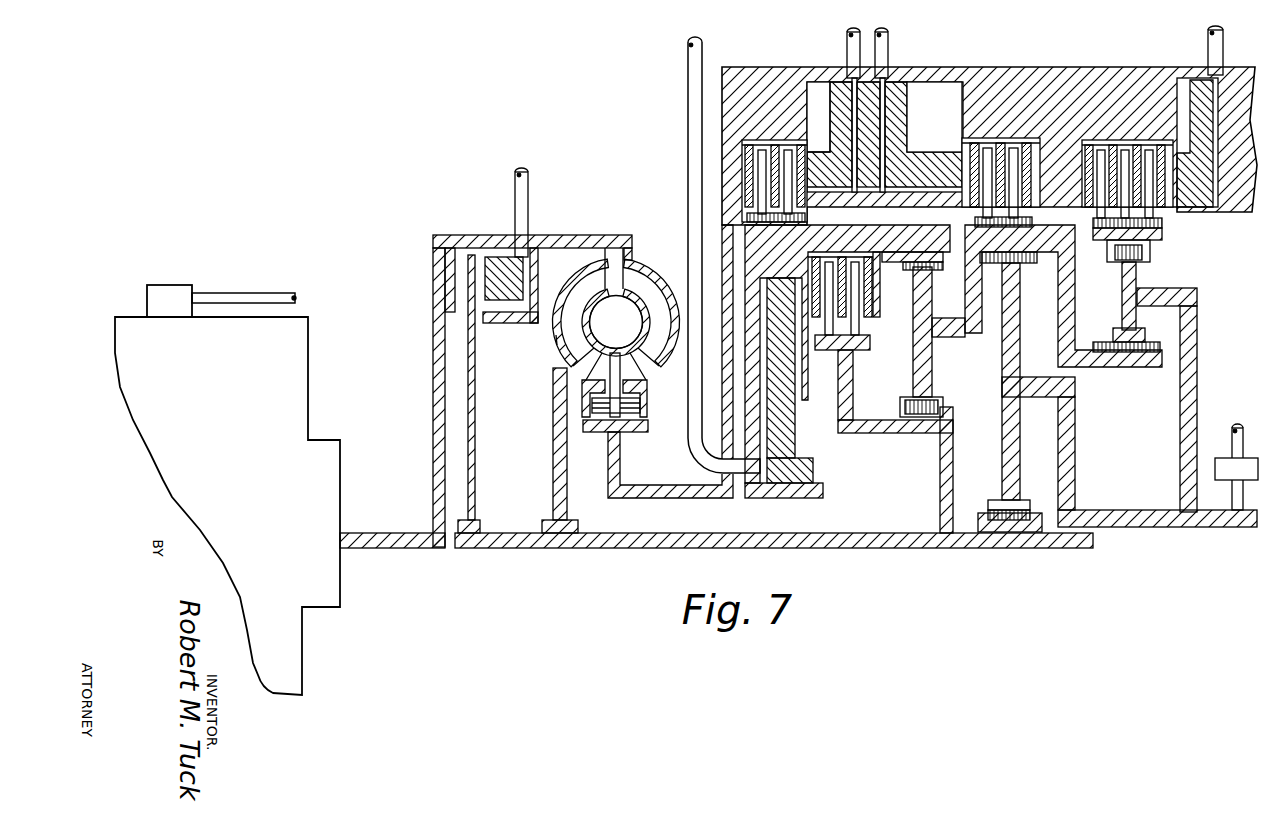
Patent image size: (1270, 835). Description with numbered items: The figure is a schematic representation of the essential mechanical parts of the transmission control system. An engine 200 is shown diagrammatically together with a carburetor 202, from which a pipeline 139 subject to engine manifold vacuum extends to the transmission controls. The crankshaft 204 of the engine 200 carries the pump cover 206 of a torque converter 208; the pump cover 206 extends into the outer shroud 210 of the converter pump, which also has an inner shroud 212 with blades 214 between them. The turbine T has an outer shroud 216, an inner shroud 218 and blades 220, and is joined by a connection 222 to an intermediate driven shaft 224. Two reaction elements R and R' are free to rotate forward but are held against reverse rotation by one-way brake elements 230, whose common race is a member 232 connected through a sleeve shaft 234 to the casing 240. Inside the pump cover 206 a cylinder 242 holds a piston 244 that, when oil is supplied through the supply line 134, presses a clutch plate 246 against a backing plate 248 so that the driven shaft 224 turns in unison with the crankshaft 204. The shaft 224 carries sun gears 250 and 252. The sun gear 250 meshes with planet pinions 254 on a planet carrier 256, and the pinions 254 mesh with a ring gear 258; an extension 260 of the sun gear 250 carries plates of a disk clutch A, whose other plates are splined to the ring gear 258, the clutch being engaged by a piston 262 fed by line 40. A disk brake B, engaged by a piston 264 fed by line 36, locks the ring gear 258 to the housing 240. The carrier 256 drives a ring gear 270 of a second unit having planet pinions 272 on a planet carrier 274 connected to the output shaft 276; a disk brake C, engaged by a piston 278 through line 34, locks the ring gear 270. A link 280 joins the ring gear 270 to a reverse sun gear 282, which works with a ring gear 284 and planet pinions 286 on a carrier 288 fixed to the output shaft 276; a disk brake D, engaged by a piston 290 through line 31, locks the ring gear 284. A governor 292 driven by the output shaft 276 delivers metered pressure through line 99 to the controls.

The engine 200 is at (310, 623).
The carburetor 202 is at (162, 305).
The pipeline 139 is at (297, 295).
The crankshaft 204 is at (373, 548).
The pump cover 206 is at (457, 235).
The backing plate 248 is at (447, 283).
The supply line 134 is at (529, 182).
The cylinder 242 is at (537, 246).
The piston 244 is at (504, 302).
The clutch plate 246 is at (476, 365).
The connection 222 is at (553, 420).
The intermediate driven shaft 224 is at (599, 548).
The blades 220 is at (614, 270).
The torque converter 208 is at (642, 278).
The inner shroud 212 is at (641, 300).
The outer shroud 216 is at (573, 300).
The inner shroud 218 is at (588, 319).
The blades 214 is at (652, 318).
The reaction element R is at (584, 357).
The reaction element R' is at (649, 357).
The turbine T is at (556, 339).
The outer shroud 210 is at (648, 366).
The one-way brake elements 230 is at (608, 424).
The member 232 is at (639, 432).
The sleeve shaft 234 is at (698, 498).
The line 40 is at (687, 60).
The casing 240 is at (752, 72).
The piston 264 is at (838, 92).
The line 36 is at (848, 38).
The line 34 is at (889, 43).
The piston 278 is at (908, 108).
The line 31 is at (1208, 48).
The piston 290 is at (1207, 200).
The ring gear 284 is at (1163, 229).
The planet pinions 286 is at (1138, 258).
The carrier 288 is at (1180, 292).
The sun gear 282 is at (1097, 352).
The disk brake B is at (809, 205).
The disk brake C is at (965, 198).
The disk brake D is at (1090, 210).
The disk clutch A is at (869, 318).
The ring gear 258 is at (893, 266).
The extension 260 is at (827, 351).
The piston 262 is at (814, 470).
The sun gear 250 is at (898, 400).
The planet pinions 254 is at (933, 379).
The planet carrier 256 is at (956, 330).
The ring gear 270 is at (1038, 265).
The planet carrier 274 is at (1037, 390).
The link 280 is at (1076, 298).
The planet pinions 272 is at (1020, 502).
The sun gear 252 is at (1022, 533).
The output shaft 276 is at (1127, 528).
The line 99 is at (1232, 432).
The governor 292 is at (1215, 468).